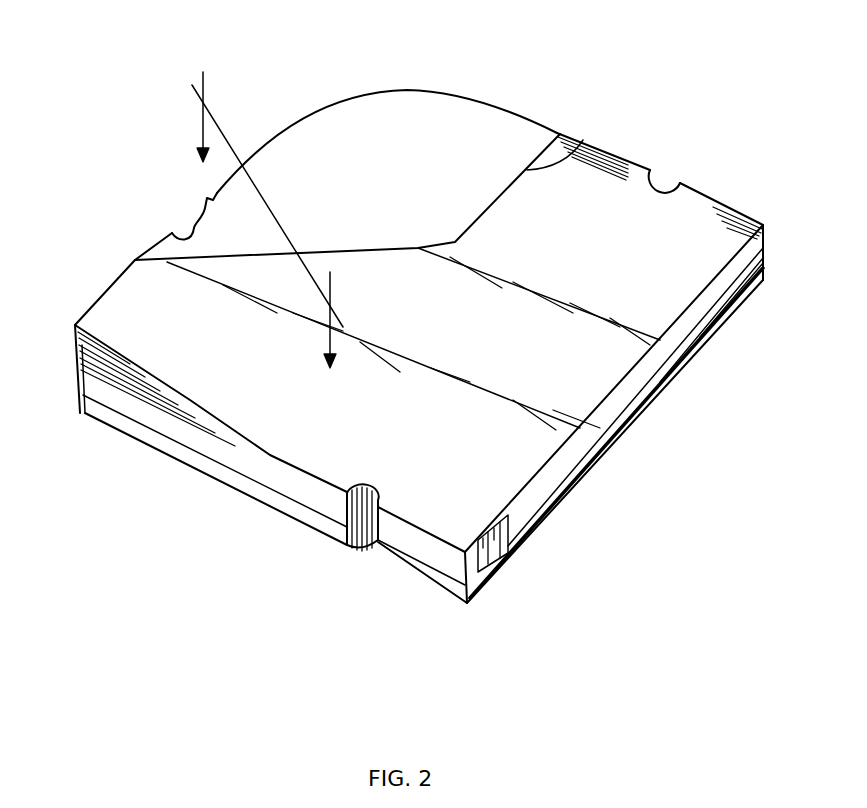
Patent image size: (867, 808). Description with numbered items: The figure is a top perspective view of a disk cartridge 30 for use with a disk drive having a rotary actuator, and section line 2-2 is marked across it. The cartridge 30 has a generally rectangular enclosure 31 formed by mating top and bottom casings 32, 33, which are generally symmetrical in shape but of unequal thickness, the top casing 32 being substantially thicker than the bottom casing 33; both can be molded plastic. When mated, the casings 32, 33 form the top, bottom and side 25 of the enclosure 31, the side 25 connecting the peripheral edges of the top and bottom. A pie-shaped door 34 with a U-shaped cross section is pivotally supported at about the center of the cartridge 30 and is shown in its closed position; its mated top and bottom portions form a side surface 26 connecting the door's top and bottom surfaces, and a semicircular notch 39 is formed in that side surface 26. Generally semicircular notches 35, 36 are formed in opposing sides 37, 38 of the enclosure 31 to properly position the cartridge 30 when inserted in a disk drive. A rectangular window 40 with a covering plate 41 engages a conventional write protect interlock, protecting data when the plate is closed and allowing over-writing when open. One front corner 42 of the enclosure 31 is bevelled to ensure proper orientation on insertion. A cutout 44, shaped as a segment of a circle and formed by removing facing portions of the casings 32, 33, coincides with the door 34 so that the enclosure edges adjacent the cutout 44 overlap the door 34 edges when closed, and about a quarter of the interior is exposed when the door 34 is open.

The section line 2-2 is at (262, 205).
The side 25 is at (100, 285).
The side surface 26 is at (294, 112).
The disk cartridge 30 is at (630, 470).
The enclosure 31 is at (764, 224).
The top casing 32 is at (705, 312).
The bottom casing 33 is at (662, 378).
The door 34 is at (452, 102).
The notch 35 is at (655, 176).
The notch 36 is at (345, 525).
The side 37 is at (712, 192).
The side 38 is at (417, 582).
The semicircular notch 39 is at (186, 216).
The rectangular window 40 is at (502, 562).
The covering plate 41 is at (510, 536).
The front corner 42 is at (75, 377).
The cutout 44 is at (580, 146).